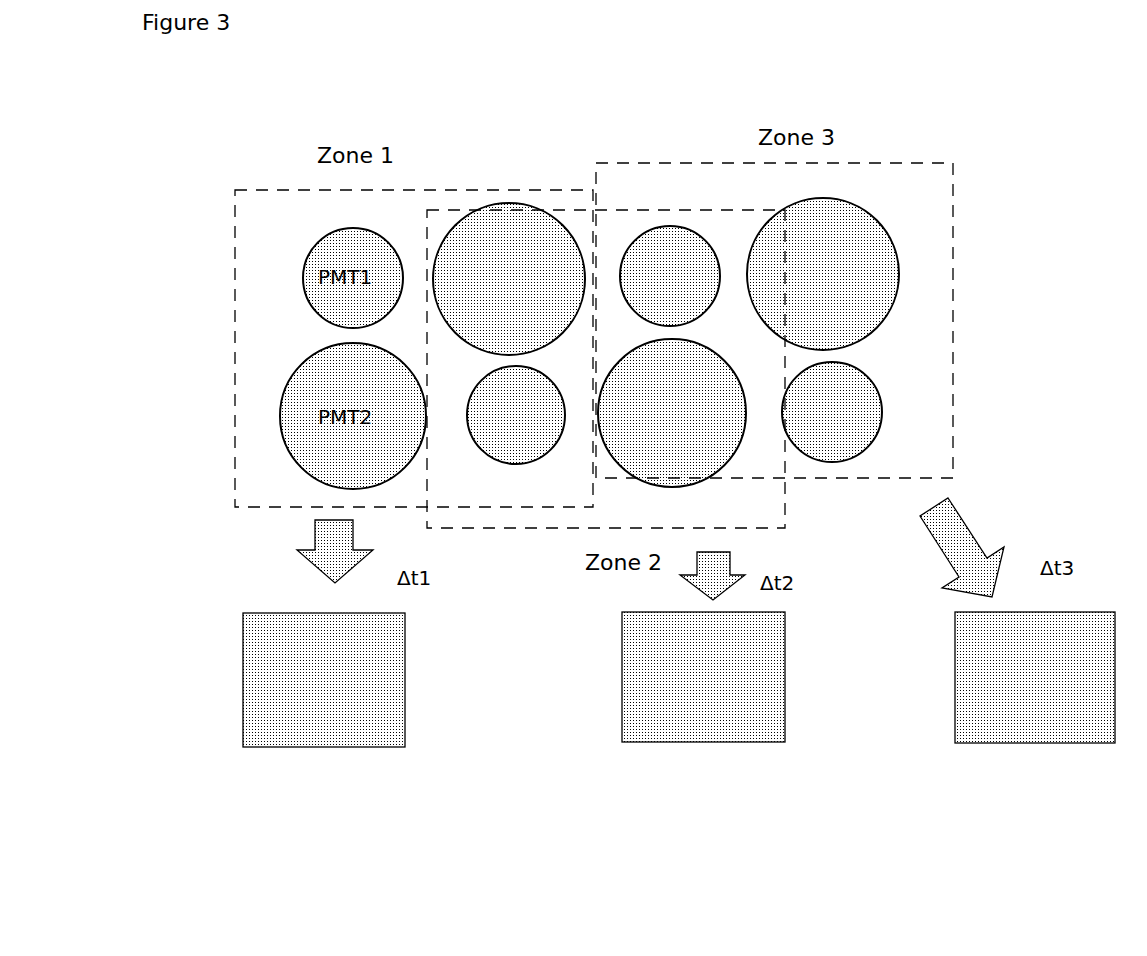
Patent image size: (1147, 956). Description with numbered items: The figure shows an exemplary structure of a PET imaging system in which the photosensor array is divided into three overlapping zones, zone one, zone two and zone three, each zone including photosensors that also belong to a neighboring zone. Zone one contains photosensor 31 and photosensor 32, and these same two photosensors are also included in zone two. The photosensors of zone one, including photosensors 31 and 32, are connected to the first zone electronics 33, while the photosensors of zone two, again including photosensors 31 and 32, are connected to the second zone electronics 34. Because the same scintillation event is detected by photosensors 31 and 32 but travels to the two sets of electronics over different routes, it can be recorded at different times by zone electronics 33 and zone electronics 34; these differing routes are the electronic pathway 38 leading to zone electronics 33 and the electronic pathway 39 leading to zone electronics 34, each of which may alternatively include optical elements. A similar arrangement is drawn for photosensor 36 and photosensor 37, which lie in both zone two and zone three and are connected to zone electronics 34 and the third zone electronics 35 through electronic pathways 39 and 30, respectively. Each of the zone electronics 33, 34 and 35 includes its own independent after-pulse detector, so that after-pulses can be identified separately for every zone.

The electronic pathway 30 is at (960, 547).
The photosensor 31 is at (515, 252).
The photosensor 32 is at (527, 433).
The zone 1 electronics 33 is at (235, 702).
The zone 2 electronics 34 is at (618, 683).
The zone 3 electronics 35 is at (945, 695).
The photosensor 36 is at (674, 281).
The photosensor 37 is at (690, 437).
The electronic pathway 38 is at (297, 550).
The electronic pathway 39 is at (735, 578).